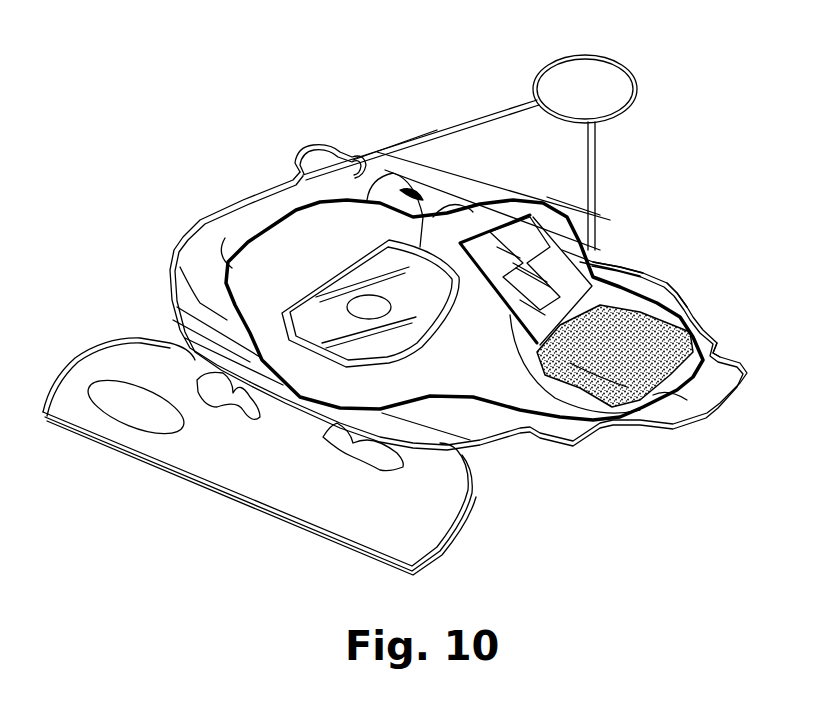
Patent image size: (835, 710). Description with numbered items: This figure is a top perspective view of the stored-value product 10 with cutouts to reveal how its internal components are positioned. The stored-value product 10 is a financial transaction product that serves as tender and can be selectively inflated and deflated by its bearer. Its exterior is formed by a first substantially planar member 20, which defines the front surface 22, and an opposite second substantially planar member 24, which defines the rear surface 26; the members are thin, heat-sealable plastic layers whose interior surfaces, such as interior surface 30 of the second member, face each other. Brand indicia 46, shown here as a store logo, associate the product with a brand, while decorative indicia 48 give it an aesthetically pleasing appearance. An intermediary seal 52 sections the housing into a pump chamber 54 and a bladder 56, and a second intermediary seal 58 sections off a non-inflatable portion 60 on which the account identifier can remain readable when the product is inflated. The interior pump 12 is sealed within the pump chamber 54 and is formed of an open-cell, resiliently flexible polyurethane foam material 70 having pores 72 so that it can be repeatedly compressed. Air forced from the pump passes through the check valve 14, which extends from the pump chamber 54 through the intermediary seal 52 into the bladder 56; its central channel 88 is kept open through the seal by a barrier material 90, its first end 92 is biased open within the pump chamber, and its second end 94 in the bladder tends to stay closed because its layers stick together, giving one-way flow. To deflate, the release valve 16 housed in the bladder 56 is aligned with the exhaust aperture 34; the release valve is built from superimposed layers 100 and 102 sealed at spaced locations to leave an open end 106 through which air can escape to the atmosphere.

The stored-value product 10 is at (666, 64).
The interior pump 12 is at (700, 330).
The check valve 14 is at (557, 252).
The release valve 16 is at (262, 308).
The first substantially planar member 20 is at (502, 112).
The front surface 22 is at (460, 130).
The second substantially planar member 24 is at (272, 264).
The rear surface 26 is at (628, 423).
The interior surface 30 is at (362, 303).
The exhaust aperture 34 is at (327, 224).
The brand indicia 46 is at (120, 428).
The decorative indicia 48 is at (519, 173).
The intermediary seal 52 is at (622, 278).
The pump chamber 54 is at (684, 352).
The bladder 56 is at (480, 383).
The second intermediary seal 58 is at (172, 346).
The non-inflatable portion 60 is at (392, 530).
The polyurethane foam material 70 is at (600, 392).
The pores 72 is at (695, 360).
The central channel 88 is at (490, 255).
The barrier material 90 is at (593, 261).
The first end 92 is at (670, 302).
The second end 94 is at (548, 197).
The layer 100 is at (410, 347).
The layer 102 is at (378, 365).
The open end 106 is at (380, 176).